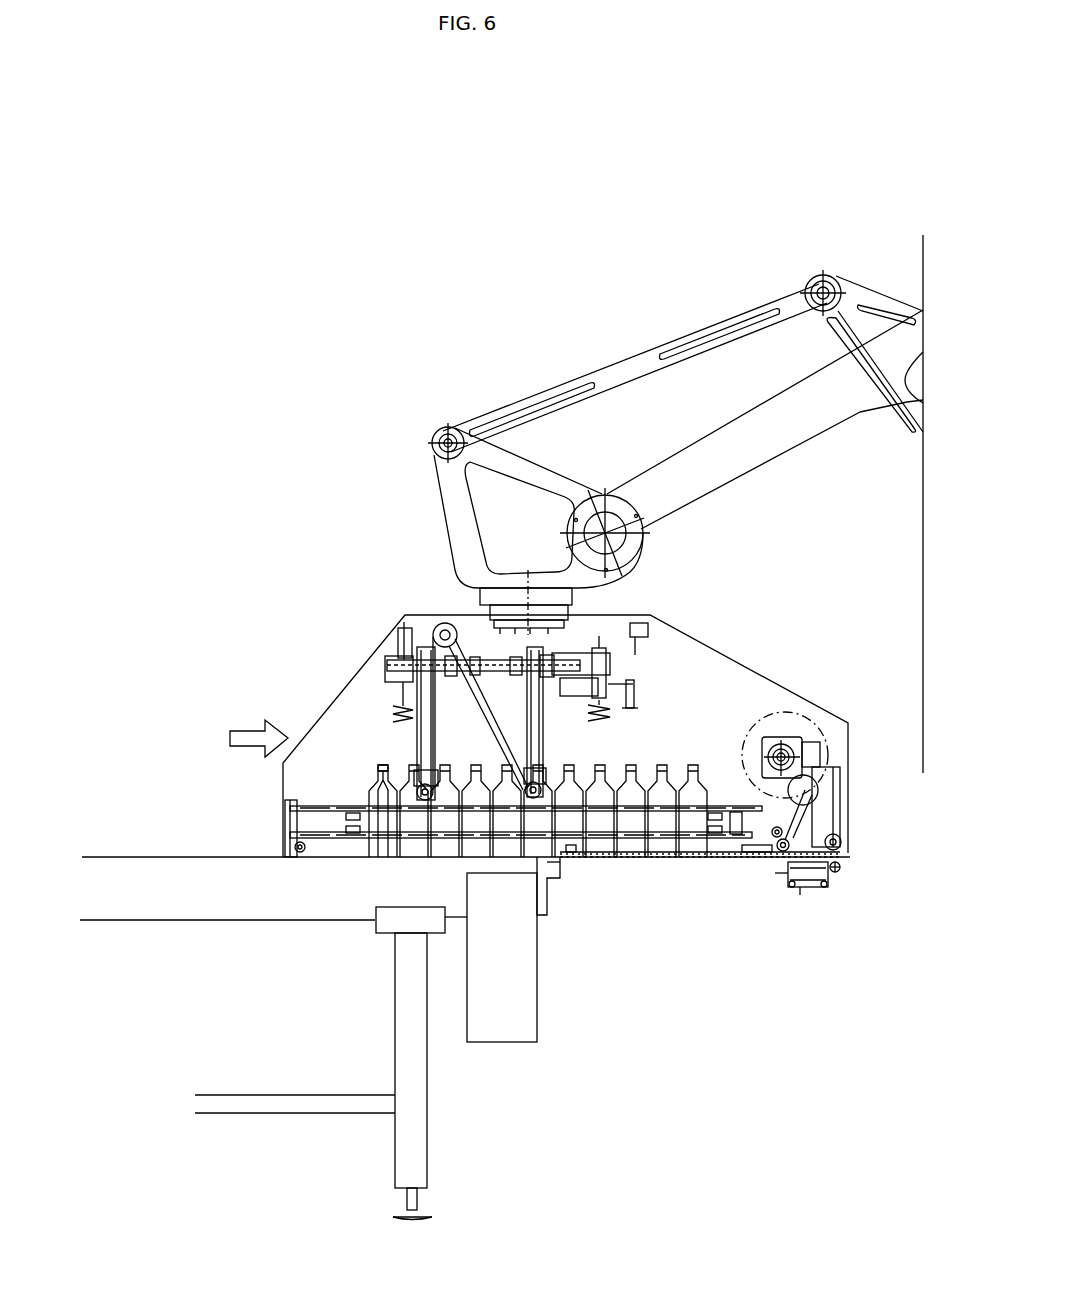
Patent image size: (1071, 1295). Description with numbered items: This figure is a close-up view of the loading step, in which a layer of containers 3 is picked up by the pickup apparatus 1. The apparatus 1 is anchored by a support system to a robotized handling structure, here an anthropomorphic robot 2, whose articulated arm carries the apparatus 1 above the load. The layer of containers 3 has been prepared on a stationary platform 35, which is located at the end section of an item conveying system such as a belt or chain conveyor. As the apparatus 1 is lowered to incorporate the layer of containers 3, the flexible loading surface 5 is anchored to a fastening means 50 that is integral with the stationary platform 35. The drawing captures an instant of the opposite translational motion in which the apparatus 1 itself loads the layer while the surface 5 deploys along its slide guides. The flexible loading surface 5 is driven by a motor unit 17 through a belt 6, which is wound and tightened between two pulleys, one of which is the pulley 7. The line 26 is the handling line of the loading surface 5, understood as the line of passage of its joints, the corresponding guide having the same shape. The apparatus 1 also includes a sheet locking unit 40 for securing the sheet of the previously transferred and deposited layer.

The pickup apparatus 1 is at (358, 623).
The anthropomorphic robot 2 is at (722, 487).
The containers 3 is at (608, 765).
The flexible loading surface 5 is at (690, 871).
The belt 6 is at (330, 848).
The pulley 7 is at (310, 840).
The motor unit 17 is at (797, 735).
The handling line 26 is at (775, 700).
The stationary platform 35 is at (212, 857).
The sheet locking unit 40 is at (822, 898).
The fastening means 50 is at (565, 870).